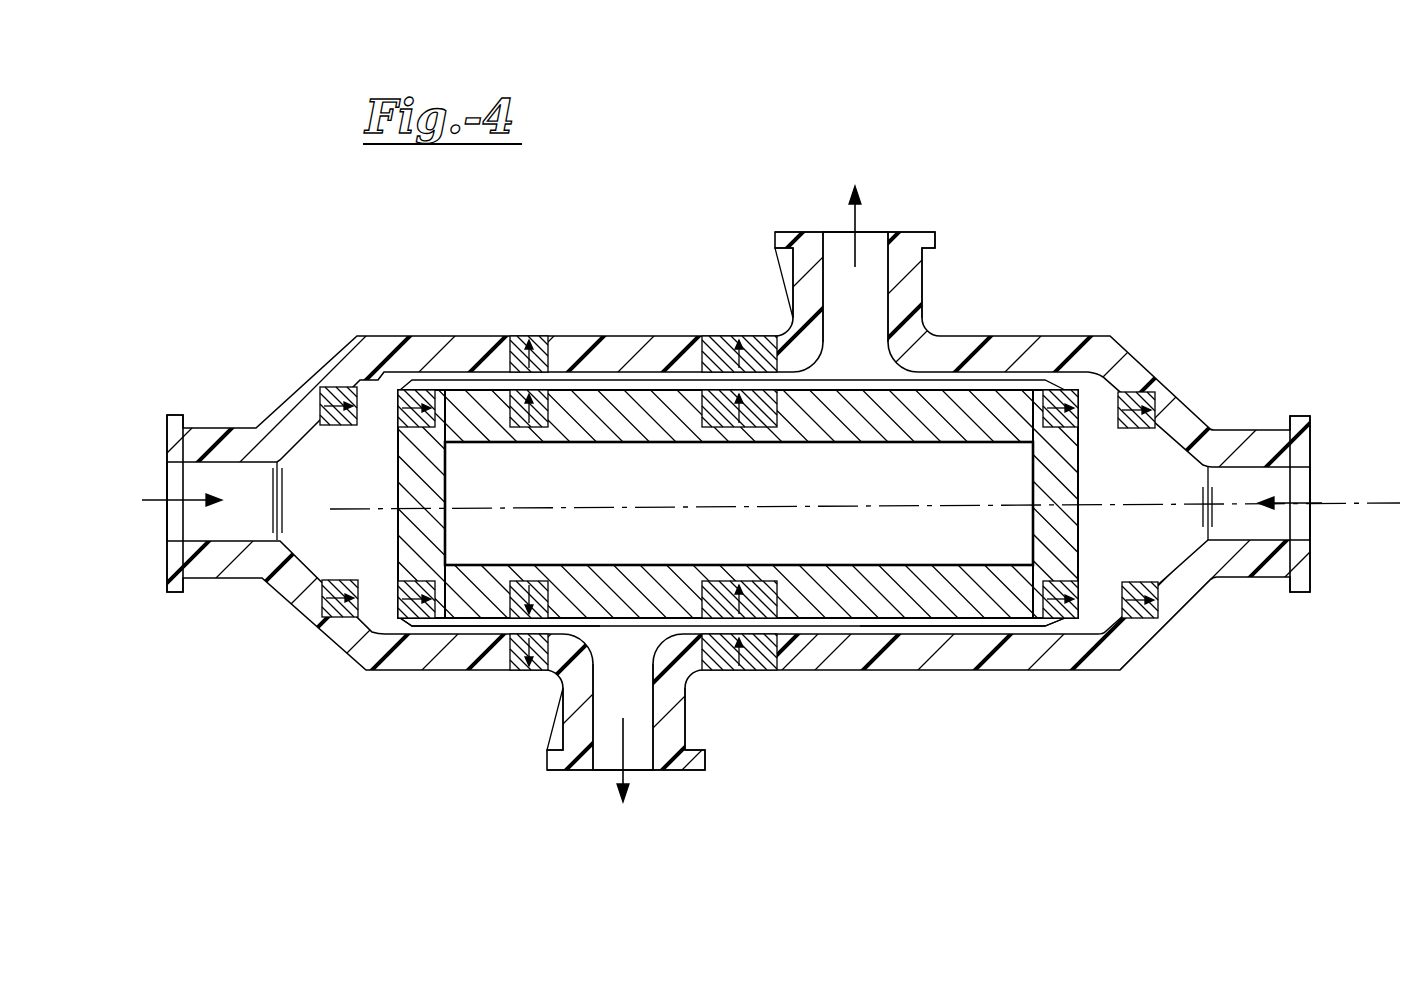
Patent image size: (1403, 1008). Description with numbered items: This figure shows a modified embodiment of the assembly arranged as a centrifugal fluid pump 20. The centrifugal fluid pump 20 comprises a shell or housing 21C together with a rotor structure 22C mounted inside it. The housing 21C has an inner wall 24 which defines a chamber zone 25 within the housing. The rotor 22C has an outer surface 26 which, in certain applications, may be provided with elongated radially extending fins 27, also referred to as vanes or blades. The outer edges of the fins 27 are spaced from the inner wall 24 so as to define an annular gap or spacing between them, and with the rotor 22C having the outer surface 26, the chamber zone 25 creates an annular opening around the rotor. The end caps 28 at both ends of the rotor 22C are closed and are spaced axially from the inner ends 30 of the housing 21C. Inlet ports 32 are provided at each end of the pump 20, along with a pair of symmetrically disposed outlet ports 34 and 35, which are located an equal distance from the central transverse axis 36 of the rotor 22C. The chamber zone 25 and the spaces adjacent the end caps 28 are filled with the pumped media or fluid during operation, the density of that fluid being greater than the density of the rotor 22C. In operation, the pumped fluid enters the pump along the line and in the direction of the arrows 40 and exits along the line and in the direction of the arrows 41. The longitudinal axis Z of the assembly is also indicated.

The centrifugal fluid pump 20 is at (1166, 342).
The housing 21C is at (913, 671).
The rotor structure 22C is at (663, 388).
The inner wall 24 is at (853, 626).
The chamber zone 25 is at (970, 627).
The outer surface 26 is at (997, 390).
The fins 27 is at (468, 625).
The end caps 28 is at (398, 466).
The inner ends 30 is at (363, 384).
The inlet ports 32 is at (167, 472).
The outlet port 34 is at (603, 770).
The outlet port 35 is at (875, 232).
The central transverse axis 36 is at (743, 430).
The arrows 40 is at (158, 500).
The arrows 41 is at (848, 222).
The longitudinal axis Z is at (1148, 505).